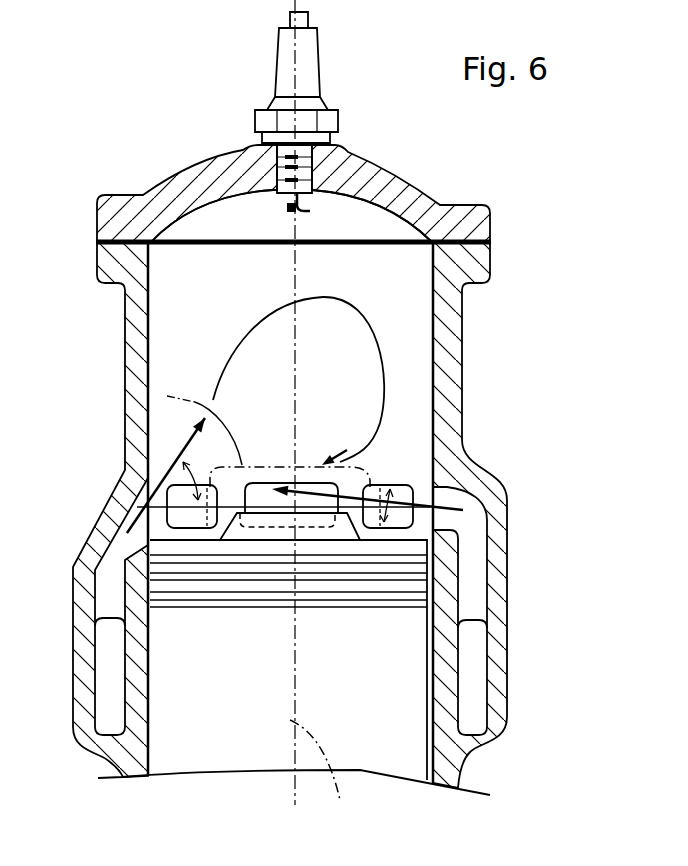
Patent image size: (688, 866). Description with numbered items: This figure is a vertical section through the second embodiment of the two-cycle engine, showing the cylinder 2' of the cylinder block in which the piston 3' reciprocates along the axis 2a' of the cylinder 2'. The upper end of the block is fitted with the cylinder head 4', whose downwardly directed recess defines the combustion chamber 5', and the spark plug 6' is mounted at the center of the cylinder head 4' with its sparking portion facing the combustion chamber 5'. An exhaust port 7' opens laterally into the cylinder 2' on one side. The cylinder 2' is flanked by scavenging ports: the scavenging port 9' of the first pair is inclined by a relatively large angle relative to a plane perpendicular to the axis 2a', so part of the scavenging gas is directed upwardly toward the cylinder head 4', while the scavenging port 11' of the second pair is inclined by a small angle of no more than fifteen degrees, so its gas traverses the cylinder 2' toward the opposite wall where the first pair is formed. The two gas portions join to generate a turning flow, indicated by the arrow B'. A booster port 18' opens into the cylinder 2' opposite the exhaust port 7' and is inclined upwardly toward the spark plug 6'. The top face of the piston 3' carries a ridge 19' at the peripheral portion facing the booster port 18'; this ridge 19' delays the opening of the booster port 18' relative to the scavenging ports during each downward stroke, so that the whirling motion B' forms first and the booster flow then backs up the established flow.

The cylinder head 4' is at (288, 183).
The combustion chamber 5' is at (289, 177).
The spark plug 6' is at (326, 112).
The turning flow arrow B' is at (332, 302).
The cylinder 2' is at (283, 519).
The exhaust port 7' is at (163, 414).
The scavenging port 9' is at (251, 582).
The booster port 18' is at (328, 437).
The scavenging port 11' is at (427, 487).
The ridge 19' is at (391, 599).
The piston 3' is at (288, 688).
The axis of the cylinder 2a' is at (333, 778).